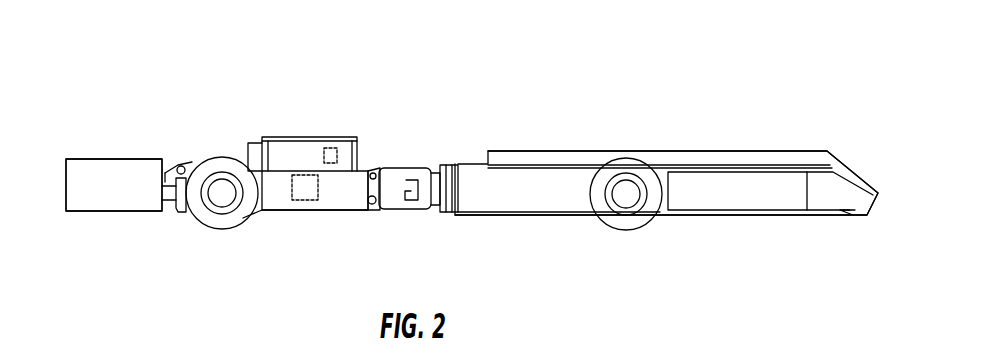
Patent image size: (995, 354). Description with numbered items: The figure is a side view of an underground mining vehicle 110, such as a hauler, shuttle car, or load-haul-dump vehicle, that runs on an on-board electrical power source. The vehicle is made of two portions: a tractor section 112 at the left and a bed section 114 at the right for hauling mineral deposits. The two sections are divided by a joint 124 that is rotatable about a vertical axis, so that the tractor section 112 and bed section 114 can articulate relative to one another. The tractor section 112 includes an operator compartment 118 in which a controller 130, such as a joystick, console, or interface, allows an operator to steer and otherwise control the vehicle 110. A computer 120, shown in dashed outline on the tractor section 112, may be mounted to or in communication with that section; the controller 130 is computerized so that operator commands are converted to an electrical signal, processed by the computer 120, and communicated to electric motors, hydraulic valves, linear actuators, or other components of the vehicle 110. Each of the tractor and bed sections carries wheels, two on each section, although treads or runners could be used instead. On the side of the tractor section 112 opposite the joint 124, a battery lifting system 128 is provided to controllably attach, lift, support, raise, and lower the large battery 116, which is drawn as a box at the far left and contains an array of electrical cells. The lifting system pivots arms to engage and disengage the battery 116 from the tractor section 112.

The underground mining vehicle 110 is at (99, 103).
The tractor section 112 is at (300, 134).
The bed section 114 is at (628, 148).
The battery 116 is at (103, 206).
The operator compartment 118 is at (336, 212).
The computer 120 is at (316, 204).
The joint 124 is at (397, 165).
The battery lifting system 128 is at (181, 135).
The controller 130 is at (341, 135).